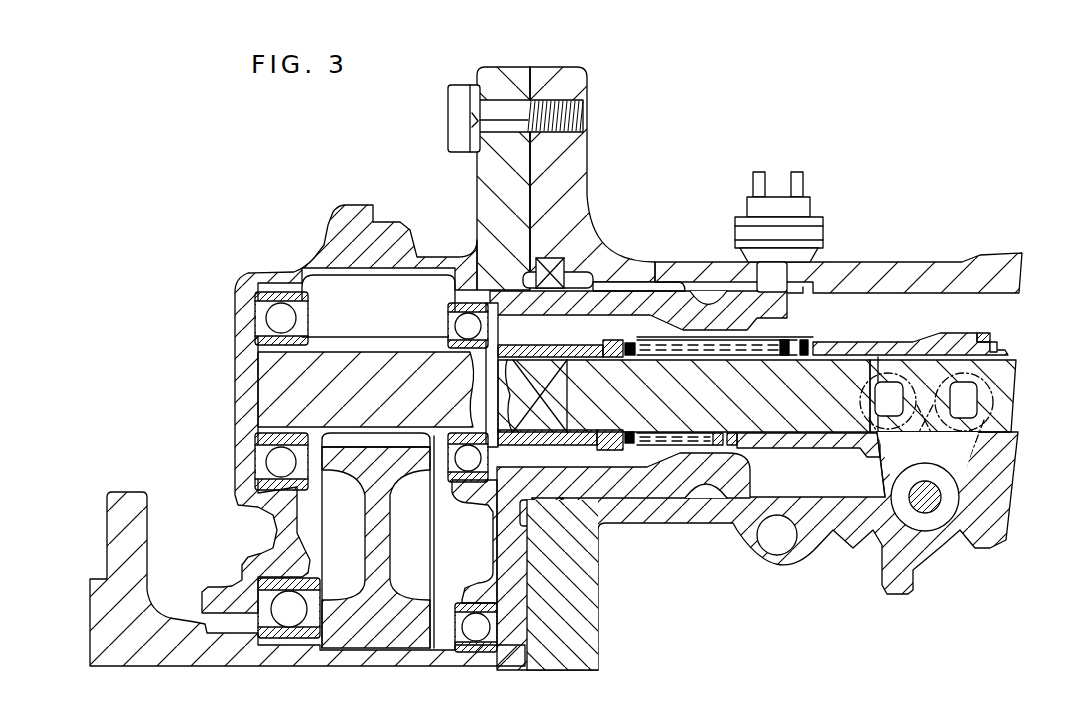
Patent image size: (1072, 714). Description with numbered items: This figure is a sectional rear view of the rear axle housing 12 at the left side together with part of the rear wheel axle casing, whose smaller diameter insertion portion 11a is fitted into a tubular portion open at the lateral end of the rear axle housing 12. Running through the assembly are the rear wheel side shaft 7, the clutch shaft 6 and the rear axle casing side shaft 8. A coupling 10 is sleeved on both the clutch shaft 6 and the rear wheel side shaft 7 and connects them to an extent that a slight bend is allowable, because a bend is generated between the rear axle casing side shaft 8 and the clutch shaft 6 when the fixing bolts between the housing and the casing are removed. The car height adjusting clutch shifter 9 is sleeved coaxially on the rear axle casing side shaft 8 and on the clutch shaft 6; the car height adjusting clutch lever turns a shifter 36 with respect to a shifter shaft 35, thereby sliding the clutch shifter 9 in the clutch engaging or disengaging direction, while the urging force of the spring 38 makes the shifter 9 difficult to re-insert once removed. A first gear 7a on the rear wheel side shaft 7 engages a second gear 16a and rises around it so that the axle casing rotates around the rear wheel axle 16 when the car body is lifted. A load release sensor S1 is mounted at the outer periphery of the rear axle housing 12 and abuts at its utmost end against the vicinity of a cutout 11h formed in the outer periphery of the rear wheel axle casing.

The clutch shaft 6 is at (751, 417).
The rear wheel side shaft 7 is at (393, 406).
The first gear 7a is at (345, 345).
The rear axle casing side shaft 8 is at (1003, 407).
The car height adjusting clutch shifter 9 is at (876, 342).
The coupling 10 is at (548, 442).
The smaller diameter insertion portion 11a is at (669, 520).
The cutout 11h is at (797, 293).
The rear axle housing 12 is at (652, 261).
The rear wheel axle 16 is at (175, 610).
The second gear 16a is at (420, 564).
The shifter shaft 35 is at (945, 492).
The shifter 36 is at (880, 470).
The spring 38 is at (617, 340).
The load release sensor S1 is at (737, 226).